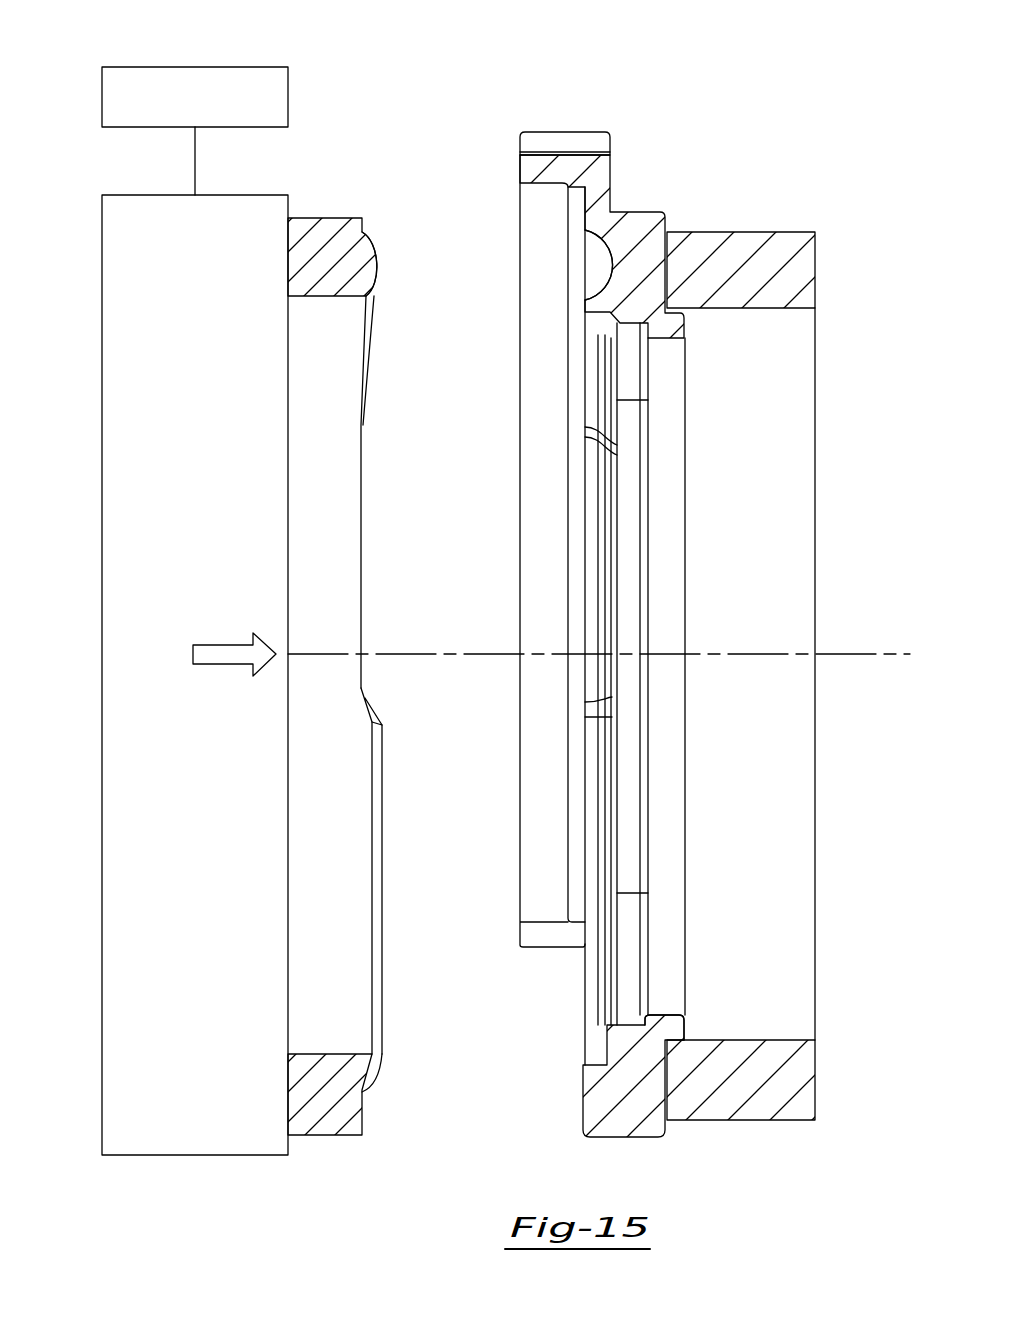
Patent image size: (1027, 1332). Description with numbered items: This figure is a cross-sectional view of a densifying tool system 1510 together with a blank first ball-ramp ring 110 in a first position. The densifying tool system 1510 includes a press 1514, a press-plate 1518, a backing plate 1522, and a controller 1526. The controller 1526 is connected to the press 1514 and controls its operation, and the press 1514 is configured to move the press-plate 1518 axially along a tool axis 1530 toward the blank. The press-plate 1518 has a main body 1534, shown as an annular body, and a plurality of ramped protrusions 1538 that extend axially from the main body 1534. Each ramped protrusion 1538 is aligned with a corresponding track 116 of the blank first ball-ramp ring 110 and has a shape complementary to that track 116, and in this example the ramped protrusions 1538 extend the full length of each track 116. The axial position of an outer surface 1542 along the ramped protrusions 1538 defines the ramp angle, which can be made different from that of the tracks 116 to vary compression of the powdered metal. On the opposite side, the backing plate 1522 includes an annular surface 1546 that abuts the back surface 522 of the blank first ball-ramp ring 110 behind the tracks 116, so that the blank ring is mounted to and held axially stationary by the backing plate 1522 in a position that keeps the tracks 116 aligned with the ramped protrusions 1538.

The controller 1526 is at (165, 67).
The press 1514 is at (152, 404).
The press-plate 1518 is at (326, 242).
The ramped protrusion 1538 is at (376, 258).
The outer surface 1542 is at (386, 284).
The main body 1534 is at (322, 1097).
The blank first ball-ramp ring 110 is at (645, 212).
The track 116 is at (600, 265).
The backing plate 1522 is at (782, 238).
The back surface 522 is at (667, 1098).
The annular surface 1546 is at (665, 1080).
The tool axis 1530 is at (858, 656).
The densifying tool system 1510 is at (780, 152).